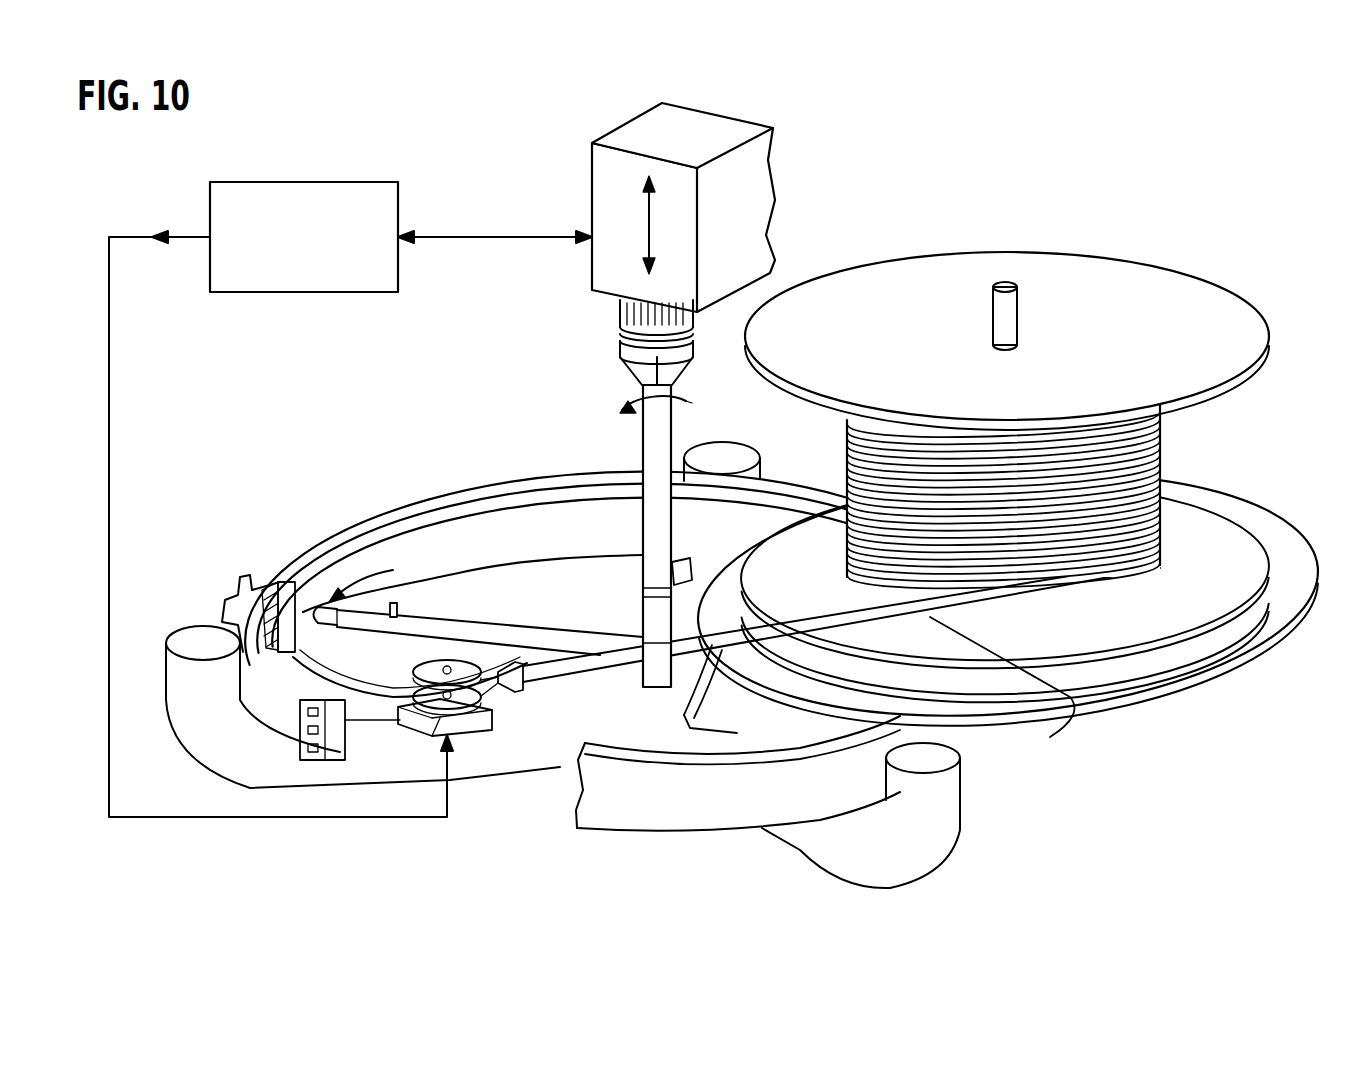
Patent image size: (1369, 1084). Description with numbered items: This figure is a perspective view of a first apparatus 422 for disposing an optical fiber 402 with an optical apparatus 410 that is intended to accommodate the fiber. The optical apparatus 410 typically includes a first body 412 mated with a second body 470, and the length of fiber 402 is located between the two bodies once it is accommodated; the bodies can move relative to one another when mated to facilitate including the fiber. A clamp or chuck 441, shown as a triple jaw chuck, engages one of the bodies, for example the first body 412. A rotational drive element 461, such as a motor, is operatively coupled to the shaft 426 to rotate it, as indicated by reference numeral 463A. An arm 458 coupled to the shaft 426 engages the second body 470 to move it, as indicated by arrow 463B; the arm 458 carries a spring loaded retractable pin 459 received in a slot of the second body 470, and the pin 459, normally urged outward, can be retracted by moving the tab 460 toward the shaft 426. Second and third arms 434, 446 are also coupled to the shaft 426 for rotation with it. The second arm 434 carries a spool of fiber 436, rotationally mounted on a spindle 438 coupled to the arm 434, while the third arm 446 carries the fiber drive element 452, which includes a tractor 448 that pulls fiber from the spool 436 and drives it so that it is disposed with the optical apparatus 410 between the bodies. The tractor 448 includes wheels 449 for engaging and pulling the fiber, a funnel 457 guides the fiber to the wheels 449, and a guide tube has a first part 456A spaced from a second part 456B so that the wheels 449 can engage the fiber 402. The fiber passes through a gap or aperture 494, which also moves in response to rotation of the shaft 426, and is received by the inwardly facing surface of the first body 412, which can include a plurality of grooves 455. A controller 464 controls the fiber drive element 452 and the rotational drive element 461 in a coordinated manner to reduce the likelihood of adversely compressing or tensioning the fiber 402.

The optical fiber 402 is at (1078, 706).
The optical apparatus 410 is at (1027, 738).
The first body 412 is at (933, 712).
The first apparatus 422 is at (821, 215).
The shaft 426 is at (655, 460).
The second arm 434 is at (688, 575).
The spool of fiber 436 is at (1140, 292).
The spindle 438 is at (1008, 284).
The clamp or chuck 441 is at (925, 865).
The third arm 446 is at (630, 647).
The tractor 448 is at (478, 745).
The wheels 449 is at (570, 760).
The fiber drive element 452 is at (447, 745).
The grooves 455 is at (305, 730).
The first part of guide tube 456A is at (373, 695).
The second part of guide tube 456B is at (335, 690).
The funnel 457 is at (517, 692).
The arm 458 is at (507, 642).
The spring loaded retractable pin 459 is at (320, 606).
The tab 460 is at (412, 600).
The rotational drive element 461 is at (660, 140).
The rotation of the shaft 463A is at (636, 397).
The arrow 463B is at (322, 598).
The controller 464 is at (266, 294).
The second body 470 is at (970, 712).
The gap or aperture 494 is at (237, 613).